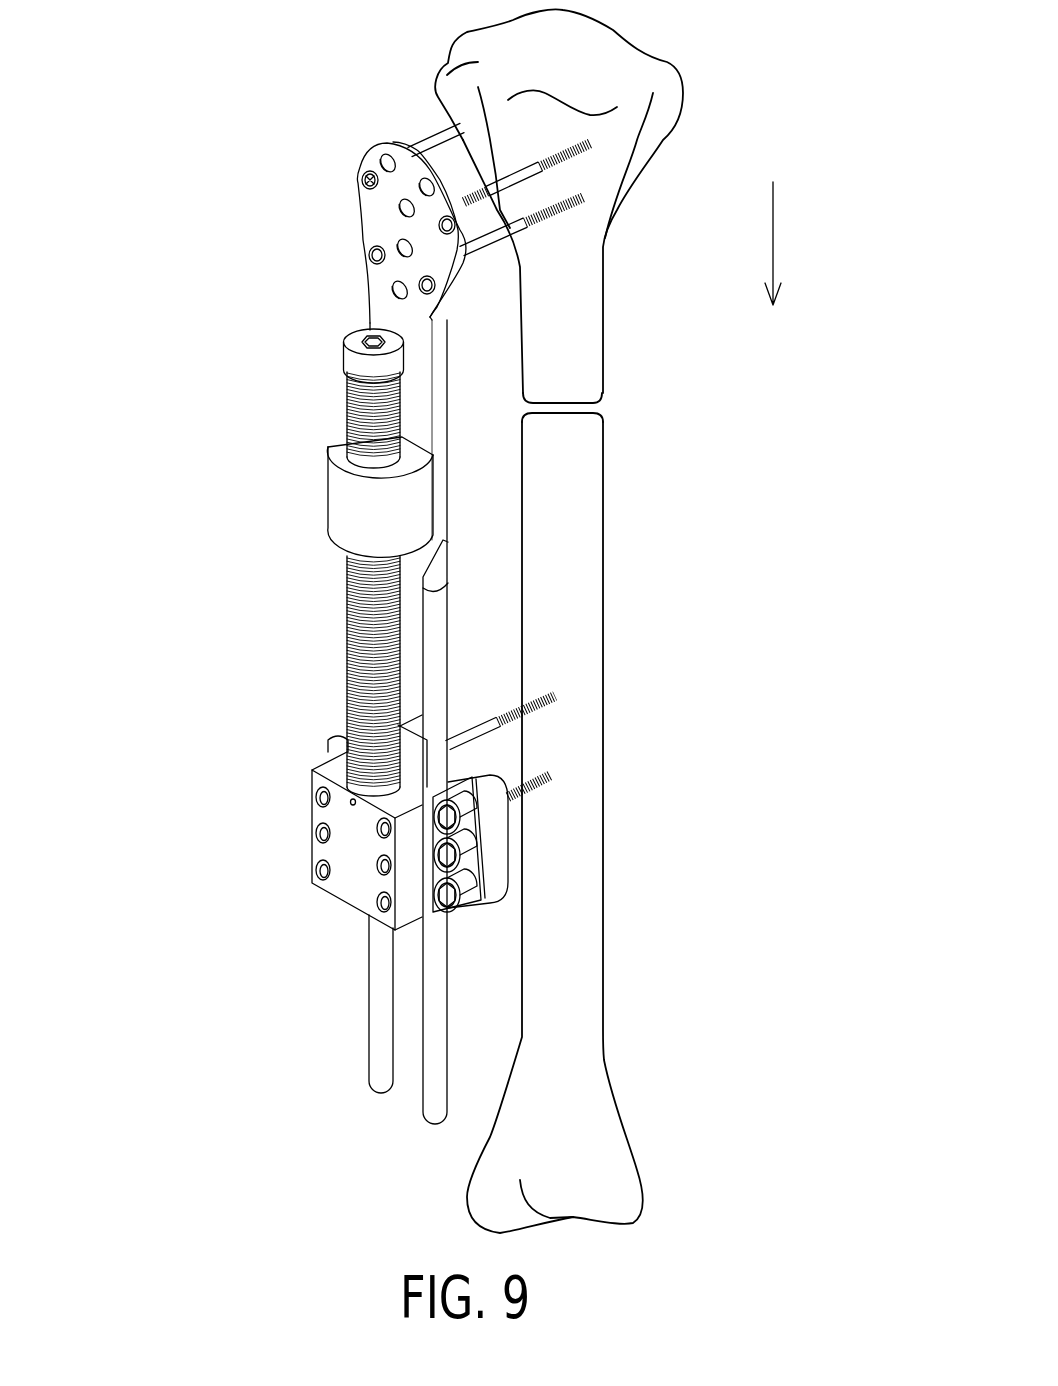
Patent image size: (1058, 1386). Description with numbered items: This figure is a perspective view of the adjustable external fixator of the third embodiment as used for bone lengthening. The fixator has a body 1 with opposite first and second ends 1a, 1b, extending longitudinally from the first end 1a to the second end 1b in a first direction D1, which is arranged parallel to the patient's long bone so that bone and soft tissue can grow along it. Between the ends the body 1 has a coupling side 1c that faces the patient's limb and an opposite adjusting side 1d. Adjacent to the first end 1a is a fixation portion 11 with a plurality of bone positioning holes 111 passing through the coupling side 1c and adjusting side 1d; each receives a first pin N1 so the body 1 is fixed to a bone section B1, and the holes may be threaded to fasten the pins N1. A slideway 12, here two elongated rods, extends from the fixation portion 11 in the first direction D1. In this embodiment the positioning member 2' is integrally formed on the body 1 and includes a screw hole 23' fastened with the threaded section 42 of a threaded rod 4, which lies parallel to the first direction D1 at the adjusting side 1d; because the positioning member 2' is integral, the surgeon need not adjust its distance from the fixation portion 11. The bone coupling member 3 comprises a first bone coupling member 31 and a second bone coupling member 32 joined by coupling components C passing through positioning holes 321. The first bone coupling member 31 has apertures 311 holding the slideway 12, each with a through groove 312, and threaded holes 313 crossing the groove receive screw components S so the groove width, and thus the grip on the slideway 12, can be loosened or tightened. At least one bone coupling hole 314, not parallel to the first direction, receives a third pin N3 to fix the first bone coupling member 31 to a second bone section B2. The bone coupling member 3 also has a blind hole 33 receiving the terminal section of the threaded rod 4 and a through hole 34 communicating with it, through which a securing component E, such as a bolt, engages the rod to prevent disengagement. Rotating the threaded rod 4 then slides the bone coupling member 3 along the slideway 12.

The body 1 is at (400, 606).
The first end 1a is at (400, 146).
The fixation portion 11 is at (338, 203).
The bone positioning hole 111 is at (294, 168).
The first pin N1 is at (294, 168).
The adjusting side 1d is at (383, 312).
The coupling side 1c is at (453, 285).
The second end 1b is at (380, 1093).
The bone section B1 is at (583, 317).
The bone section B2 is at (602, 1120).
The first direction D1 is at (776, 271).
The screw hole 23' is at (299, 398).
The threaded section 42 is at (299, 398).
The positioning member 2' is at (335, 497).
The threaded rod 4 is at (298, 558).
The blind hole 33 is at (365, 788).
The through hole 34 is at (278, 813).
The securing component E is at (350, 803).
The second bone coupling member 32 is at (295, 803).
The coupling component C is at (277, 850).
The positioning hole 321 is at (310, 847).
The bone coupling member 3 is at (448, 833).
The slideway 12 is at (574, 841).
The aperture 311 is at (432, 787).
The bone coupling hole 314 is at (572, 746).
The third pin N3 is at (425, 777).
The first bone coupling member 31 is at (579, 842).
The through groove 312 is at (480, 852).
The screw component S is at (566, 890).
The threaded hole 313 is at (462, 903).